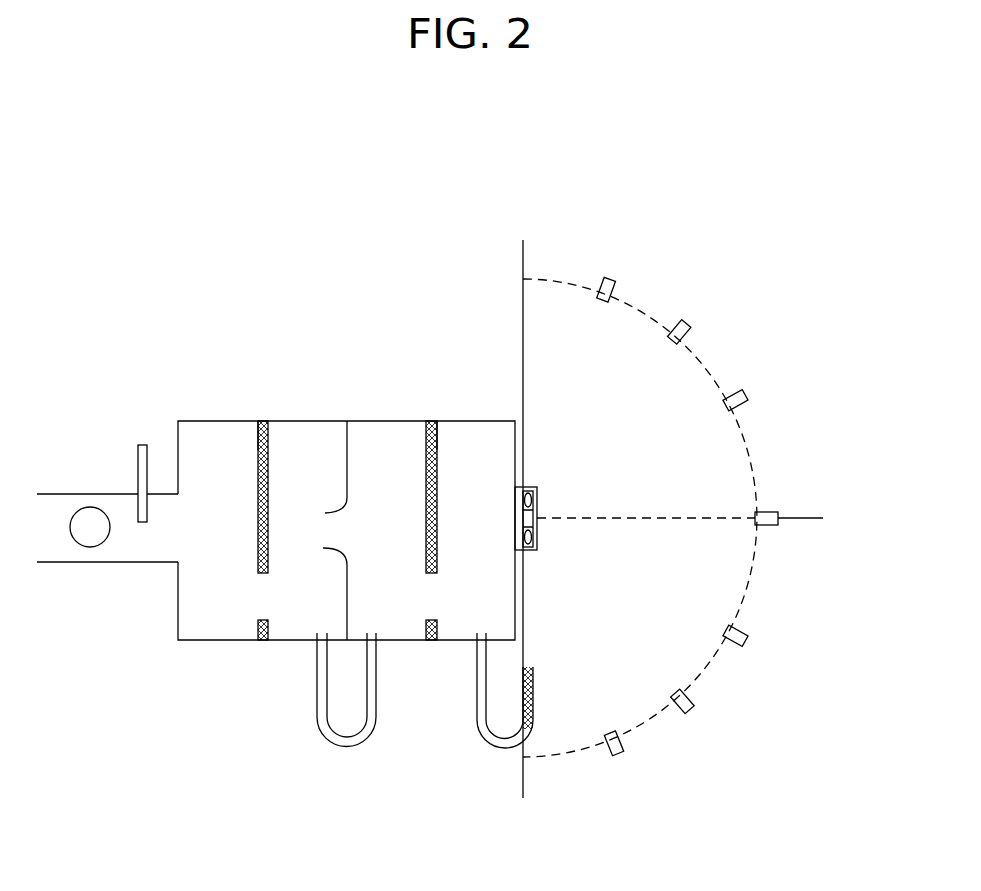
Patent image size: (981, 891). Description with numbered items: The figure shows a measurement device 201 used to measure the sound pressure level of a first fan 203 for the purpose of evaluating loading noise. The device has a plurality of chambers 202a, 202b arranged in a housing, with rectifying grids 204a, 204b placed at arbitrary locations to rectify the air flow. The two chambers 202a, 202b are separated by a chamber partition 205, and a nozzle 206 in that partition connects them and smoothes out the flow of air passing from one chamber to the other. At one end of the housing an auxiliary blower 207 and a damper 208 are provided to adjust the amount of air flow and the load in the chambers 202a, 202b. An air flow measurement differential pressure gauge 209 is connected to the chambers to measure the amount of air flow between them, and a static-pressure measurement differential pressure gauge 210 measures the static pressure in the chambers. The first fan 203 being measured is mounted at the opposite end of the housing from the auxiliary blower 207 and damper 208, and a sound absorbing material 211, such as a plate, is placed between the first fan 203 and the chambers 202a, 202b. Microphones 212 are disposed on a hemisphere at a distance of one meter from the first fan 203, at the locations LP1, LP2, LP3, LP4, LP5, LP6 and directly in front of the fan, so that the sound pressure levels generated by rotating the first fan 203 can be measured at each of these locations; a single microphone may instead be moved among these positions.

The measurement device 201 is at (233, 259).
The chamber 202a is at (258, 530).
The chamber 202b is at (427, 530).
The first fan 203 is at (547, 486).
The rectifying grid 204a is at (257, 450).
The rectifying grid 204b is at (437, 450).
The chamber partition 205 is at (348, 450).
The nozzle 206 is at (333, 497).
The auxiliary blower 207 is at (90, 547).
The damper 208 is at (138, 462).
The air flow measurement differential pressure gauge 209 is at (317, 703).
The static-pressure measurement differential pressure gauge 210 is at (490, 747).
The sound absorbing material 211 is at (523, 253).
The microphone 212 is at (758, 509).
The sound pressure level measurement location LP1 is at (614, 272).
The sound pressure level measurement location LP2 is at (689, 317).
The sound pressure level measurement location LP3 is at (751, 393).
The sound pressure level measurement location LP4 is at (751, 647).
The sound pressure level measurement location LP5 is at (696, 720).
The sound pressure level measurement location LP6 is at (628, 764).